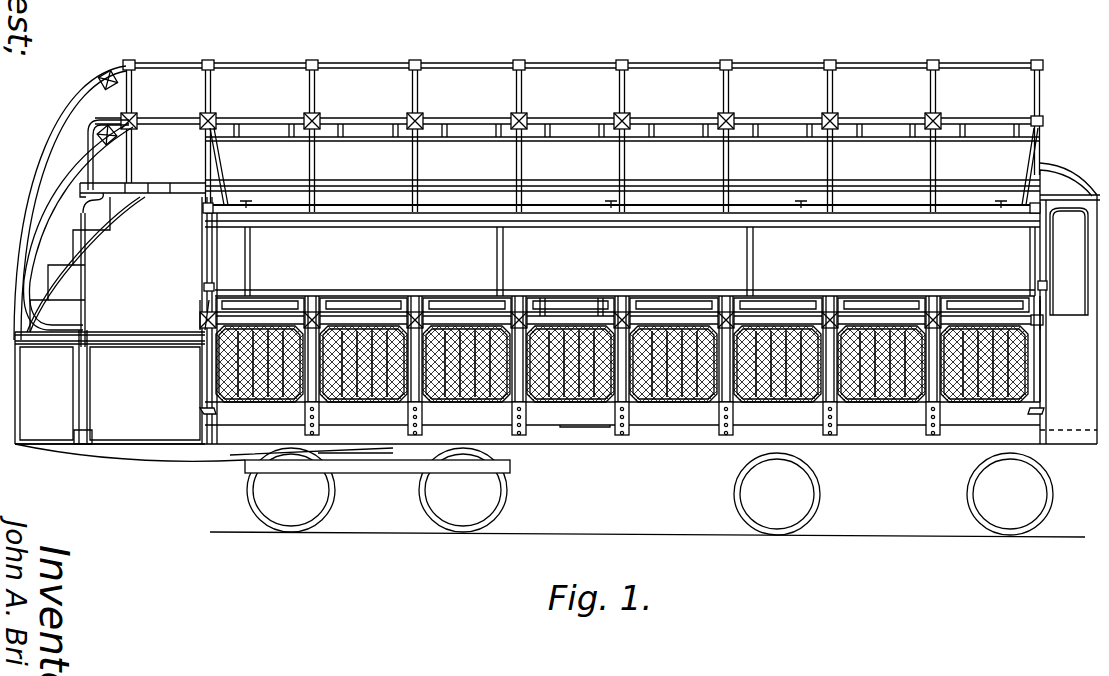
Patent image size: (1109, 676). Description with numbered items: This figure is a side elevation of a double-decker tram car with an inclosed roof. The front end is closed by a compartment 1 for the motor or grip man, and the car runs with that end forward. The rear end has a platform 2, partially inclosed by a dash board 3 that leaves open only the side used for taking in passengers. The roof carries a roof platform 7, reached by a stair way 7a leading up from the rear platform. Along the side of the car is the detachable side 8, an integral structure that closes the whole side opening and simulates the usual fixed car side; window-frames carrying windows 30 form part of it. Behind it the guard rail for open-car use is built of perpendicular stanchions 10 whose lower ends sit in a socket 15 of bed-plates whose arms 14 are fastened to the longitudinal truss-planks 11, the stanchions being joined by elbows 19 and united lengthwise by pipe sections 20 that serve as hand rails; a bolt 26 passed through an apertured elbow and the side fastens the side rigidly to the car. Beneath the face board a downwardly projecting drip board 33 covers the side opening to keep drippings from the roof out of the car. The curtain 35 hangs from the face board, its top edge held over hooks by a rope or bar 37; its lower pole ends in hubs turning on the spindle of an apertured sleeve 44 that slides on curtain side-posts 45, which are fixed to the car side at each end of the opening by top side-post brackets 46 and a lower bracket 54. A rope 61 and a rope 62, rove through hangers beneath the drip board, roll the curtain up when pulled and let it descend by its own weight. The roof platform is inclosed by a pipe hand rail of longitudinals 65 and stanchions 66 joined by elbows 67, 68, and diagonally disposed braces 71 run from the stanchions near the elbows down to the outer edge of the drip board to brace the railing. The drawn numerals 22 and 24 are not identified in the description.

The compartment 1 is at (1086, 336).
The platform 2 is at (124, 436).
The dash board 3 is at (110, 387).
The roof platform 7 is at (977, 180).
The stair way 7a is at (110, 262).
The detachable side 8 is at (880, 305).
The perpendicular stanchions 10 is at (925, 400).
The longitudinal truss-planks 11 is at (572, 410).
The arms 14 is at (632, 416).
The socket 15 is at (735, 408).
The elbows 19 is at (727, 305).
The pipe sections 20 is at (950, 300).
The side sill 22 is at (622, 422).
The bracket 24 is at (838, 416).
The bolt 26 is at (640, 305).
The windows 30 is at (620, 305).
The drip board 33 is at (1000, 203).
The curtain 35 is at (813, 290).
The rope or bar 37 is at (790, 225).
The apertured sleeve 44 is at (1043, 286).
The curtain side-posts 45 is at (1040, 335).
The top side-post brackets 46 is at (1030, 208).
The lower bracket 54 is at (1040, 412).
The rope 61 is at (753, 260).
The rope 62 is at (1030, 262).
The longitudinals 65 is at (578, 107).
The stanchions 66 is at (625, 168).
The elbows 67 is at (937, 116).
The elbows 68 is at (935, 62).
The diagonally disposed braces 71 is at (1034, 160).